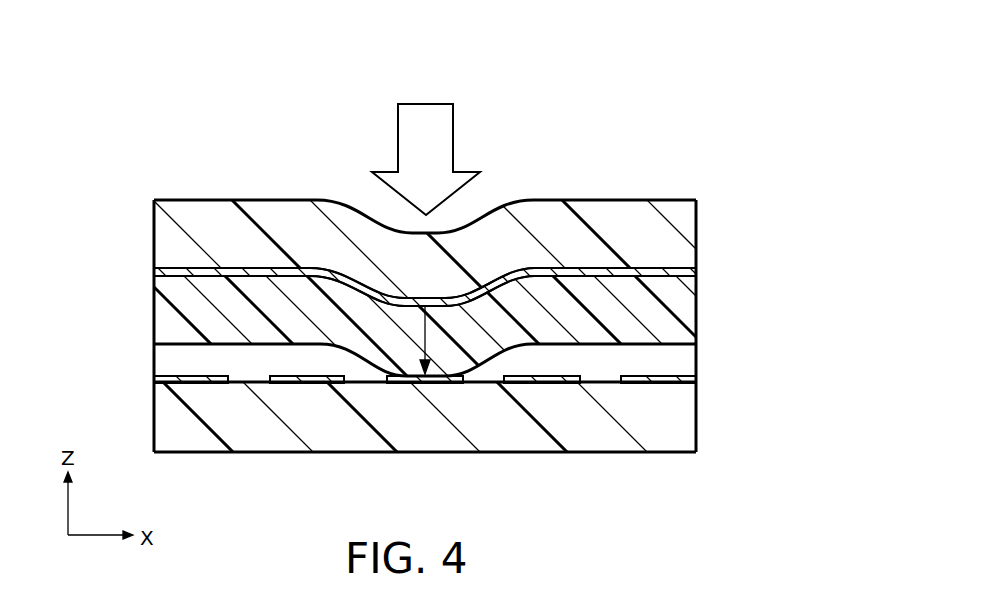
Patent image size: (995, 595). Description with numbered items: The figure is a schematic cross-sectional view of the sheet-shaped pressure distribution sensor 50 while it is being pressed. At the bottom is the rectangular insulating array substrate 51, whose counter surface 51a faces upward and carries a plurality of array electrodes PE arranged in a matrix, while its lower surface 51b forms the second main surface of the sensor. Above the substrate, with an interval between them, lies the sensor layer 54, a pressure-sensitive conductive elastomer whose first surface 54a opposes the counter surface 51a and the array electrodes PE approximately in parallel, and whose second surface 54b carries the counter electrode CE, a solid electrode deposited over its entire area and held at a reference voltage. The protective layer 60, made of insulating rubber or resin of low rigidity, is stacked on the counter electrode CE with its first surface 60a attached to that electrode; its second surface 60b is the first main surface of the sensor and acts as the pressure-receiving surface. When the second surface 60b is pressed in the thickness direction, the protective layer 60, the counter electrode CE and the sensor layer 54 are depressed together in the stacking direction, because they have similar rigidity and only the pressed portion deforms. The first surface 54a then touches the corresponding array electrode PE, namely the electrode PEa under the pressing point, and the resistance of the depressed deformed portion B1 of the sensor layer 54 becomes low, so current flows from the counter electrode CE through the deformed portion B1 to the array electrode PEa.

The pressure distribution sensor 50 is at (677, 187).
The protective layer 60 is at (692, 232).
The first surface of the protective layer 60a is at (258, 266).
The second surface of the protective layer 60b is at (602, 200).
The counter electrode CE is at (662, 284).
The sensor layer 54 is at (692, 317).
The first surface of the sensor layer 54a is at (182, 346).
The second surface of the sensor layer 54b is at (182, 270).
The deformed portion B1 is at (438, 340).
The array electrode PE is at (180, 375).
The array electrode at the pressing point PEa is at (424, 385).
The array substrate 51 is at (694, 421).
The counter surface 51a is at (236, 372).
The lower surface 51b is at (366, 453).